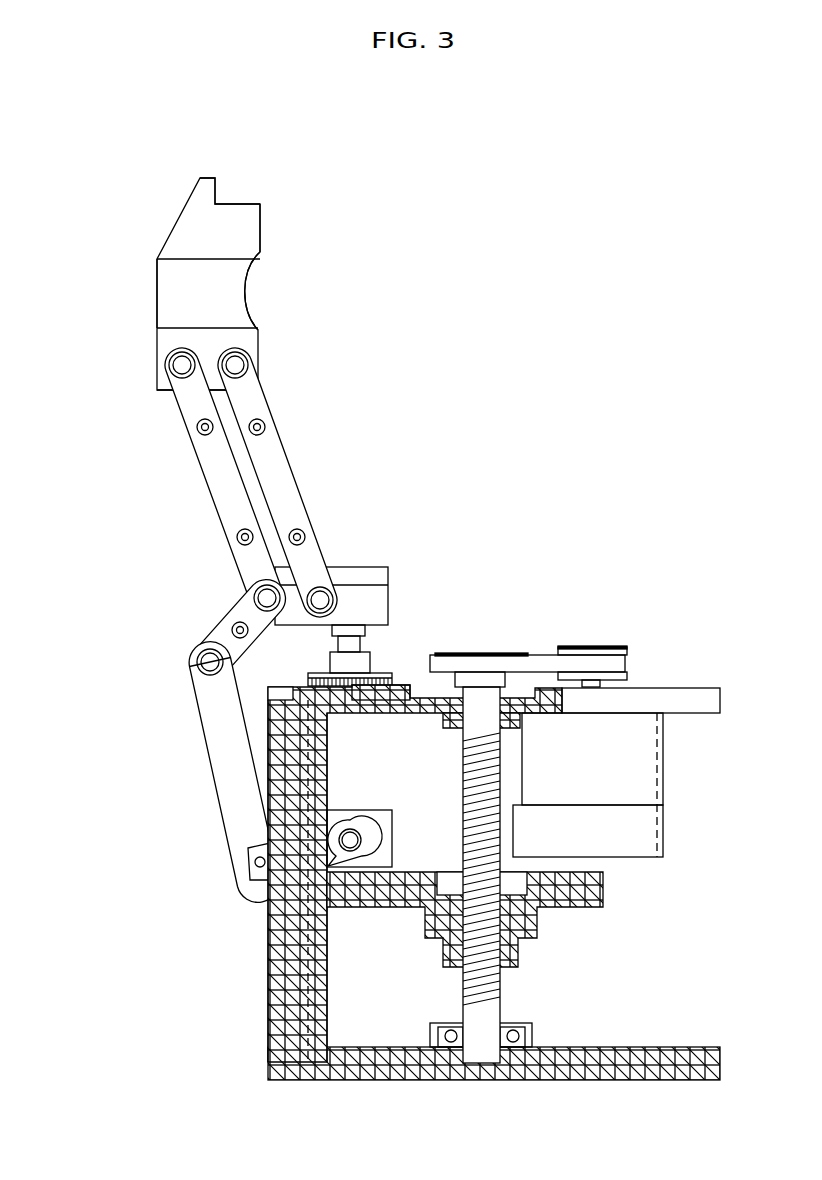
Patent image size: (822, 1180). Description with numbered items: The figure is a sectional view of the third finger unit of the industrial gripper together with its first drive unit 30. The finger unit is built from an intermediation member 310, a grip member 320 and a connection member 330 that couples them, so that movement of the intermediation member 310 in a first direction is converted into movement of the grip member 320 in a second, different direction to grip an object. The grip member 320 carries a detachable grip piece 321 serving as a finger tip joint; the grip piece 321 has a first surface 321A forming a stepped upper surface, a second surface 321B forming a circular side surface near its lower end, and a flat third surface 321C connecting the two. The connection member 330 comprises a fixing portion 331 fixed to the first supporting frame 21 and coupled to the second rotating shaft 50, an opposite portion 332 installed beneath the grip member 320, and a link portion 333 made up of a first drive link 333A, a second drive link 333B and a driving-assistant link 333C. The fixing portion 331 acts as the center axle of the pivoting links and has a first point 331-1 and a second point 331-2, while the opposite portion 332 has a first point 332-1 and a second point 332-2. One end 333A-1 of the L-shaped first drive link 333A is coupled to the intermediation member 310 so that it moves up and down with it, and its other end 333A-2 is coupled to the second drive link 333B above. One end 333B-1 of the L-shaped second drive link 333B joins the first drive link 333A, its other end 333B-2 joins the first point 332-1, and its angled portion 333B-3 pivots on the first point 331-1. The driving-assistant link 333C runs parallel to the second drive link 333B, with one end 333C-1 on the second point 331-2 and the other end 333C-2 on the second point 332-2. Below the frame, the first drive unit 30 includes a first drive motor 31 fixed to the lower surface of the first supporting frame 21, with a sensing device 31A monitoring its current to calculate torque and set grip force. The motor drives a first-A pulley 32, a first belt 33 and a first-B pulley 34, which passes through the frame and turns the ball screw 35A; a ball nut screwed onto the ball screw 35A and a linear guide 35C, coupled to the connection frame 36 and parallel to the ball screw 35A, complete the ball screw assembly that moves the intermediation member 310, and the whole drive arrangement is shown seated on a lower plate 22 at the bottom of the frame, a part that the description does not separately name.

The grip member 320 is at (142, 260).
The first surface 321A is at (243, 202).
The third surface 321C is at (260, 224).
The grip piece 321 is at (260, 258).
The second surface 321B is at (254, 312).
The opposite portion 332 is at (163, 345).
The first point 332-1 is at (177, 369).
The second point 332-2 is at (257, 343).
The other end of the second drive link 333B-2 is at (170, 390).
The other end of the driving-assistant link 333C-2 is at (238, 366).
The driving-assistant link 333C is at (290, 492).
The second drive link 333B is at (220, 510).
The connection member 330 is at (204, 493).
The one end of the driving-assistant link 333C-1 is at (335, 590).
The fixing portion 331 is at (388, 590).
The angled portion 333B-3 is at (257, 600).
The first point 331-1 is at (242, 612).
The second point 331-2 is at (335, 612).
The second rotating shaft 50 is at (338, 643).
The link portion 333 is at (200, 722).
The first drive link 333A is at (220, 775).
The one end of the second drive link 333B-1 is at (200, 660).
The other end of the first drive link 333A-2 is at (197, 676).
The one end of the first drive link 333A-1 is at (345, 834).
The intermediation member 310 is at (370, 812).
The first-B pulley 34 is at (505, 655).
The first belt 33 is at (548, 658).
The first-A pulley 32 is at (596, 650).
The first supporting frame 21 is at (720, 700).
The first drive motor 31 is at (665, 792).
The sensing device 31A is at (665, 835).
The first drive unit 30 is at (712, 880).
The connection frame 36 is at (530, 937).
The ball screw 35A is at (465, 986).
The linear guide 35C is at (283, 1003).
The base plate 22 is at (625, 1072).